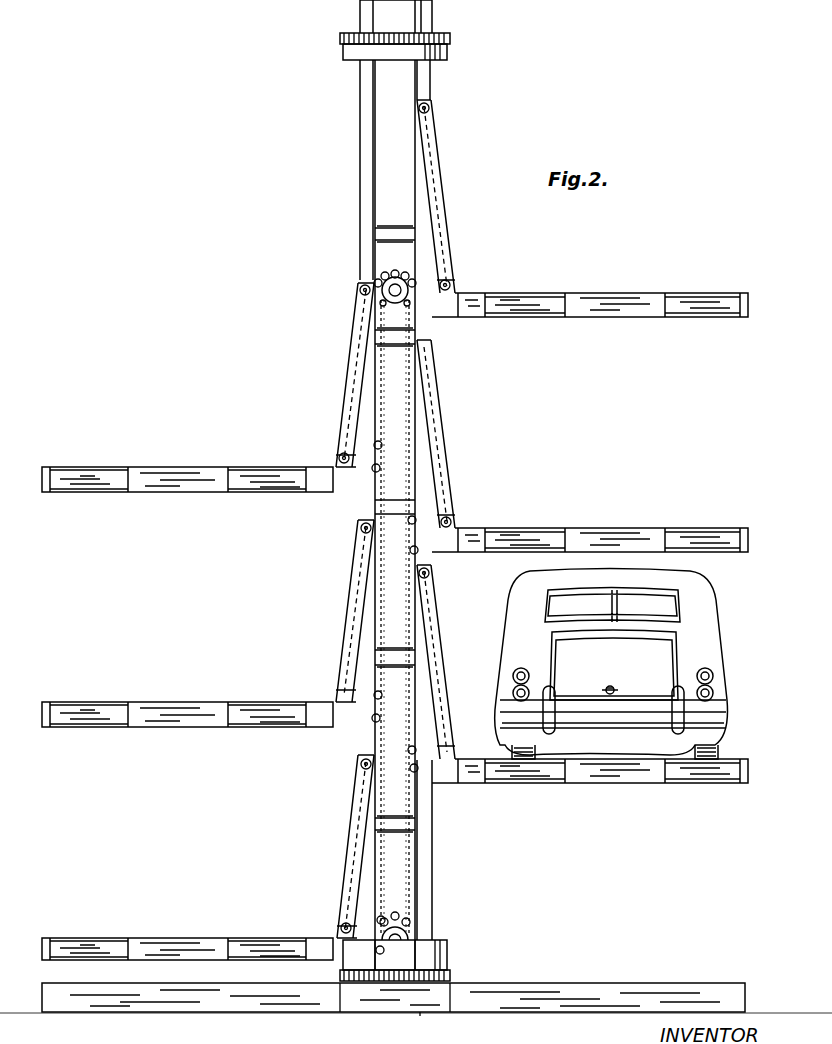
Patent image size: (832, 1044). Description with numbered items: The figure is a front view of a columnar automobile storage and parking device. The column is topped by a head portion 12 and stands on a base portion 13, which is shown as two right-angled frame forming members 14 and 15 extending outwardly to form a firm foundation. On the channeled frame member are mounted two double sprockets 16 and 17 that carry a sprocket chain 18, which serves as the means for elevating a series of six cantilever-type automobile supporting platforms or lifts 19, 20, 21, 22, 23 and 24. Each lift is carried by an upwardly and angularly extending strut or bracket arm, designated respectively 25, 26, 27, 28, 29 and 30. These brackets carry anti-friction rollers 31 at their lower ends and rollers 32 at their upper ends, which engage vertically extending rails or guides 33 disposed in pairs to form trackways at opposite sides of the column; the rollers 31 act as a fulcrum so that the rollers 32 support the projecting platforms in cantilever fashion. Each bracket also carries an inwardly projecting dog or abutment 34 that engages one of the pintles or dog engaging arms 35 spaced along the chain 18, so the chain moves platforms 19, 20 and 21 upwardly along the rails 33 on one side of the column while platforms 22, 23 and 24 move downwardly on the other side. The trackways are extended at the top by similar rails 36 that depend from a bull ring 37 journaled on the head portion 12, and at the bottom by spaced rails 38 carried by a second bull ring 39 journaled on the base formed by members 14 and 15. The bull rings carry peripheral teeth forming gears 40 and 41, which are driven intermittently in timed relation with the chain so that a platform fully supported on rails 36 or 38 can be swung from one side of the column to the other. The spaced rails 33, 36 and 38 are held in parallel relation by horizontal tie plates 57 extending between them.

The head portion 12 is at (432, 16).
The base portion 13 is at (305, 1012).
The frame forming member 14 is at (433, 1012).
The frame forming member 15 is at (534, 985).
The double sprocket 16 is at (404, 278).
The double sprocket 17 is at (410, 918).
The sprocket chain 18 is at (409, 385).
The automobile supporting platform 19 is at (180, 942).
The automobile supporting platform 20 is at (158, 705).
The automobile supporting platform 21 is at (155, 466).
The automobile supporting platform 22 is at (655, 293).
The automobile supporting platform 23 is at (615, 530).
The automobile supporting platform 24 is at (600, 783).
The strut or bracket arm 25 is at (347, 855).
The strut or bracket arm 26 is at (347, 617).
The strut or bracket arm 27 is at (347, 375).
The strut or bracket arm 28 is at (434, 190).
The strut or bracket arm 29 is at (438, 440).
The strut or bracket arm 30 is at (438, 652).
The roller 31 is at (360, 288).
The roller 32 is at (422, 110).
The rail 33 is at (362, 520).
The dog or abutment 34 is at (432, 305).
The pintle or dog engaging arm 35 is at (398, 772).
The rail 36 is at (428, 96).
The bull ring 37 is at (450, 52).
The rail 38 is at (432, 818).
The bull ring 39 is at (448, 944).
The gear 40 is at (340, 39).
The gear 41 is at (452, 975).
The tie plate 57 is at (388, 232).